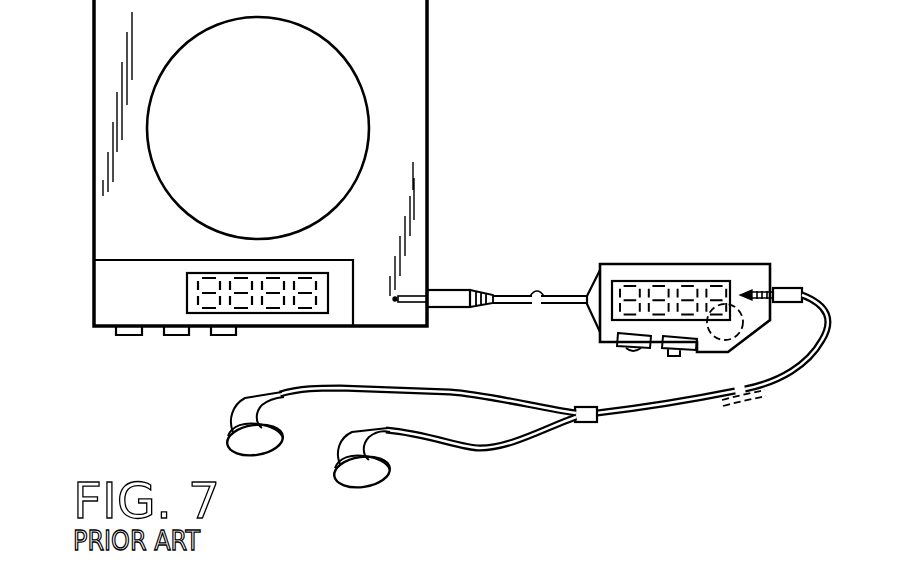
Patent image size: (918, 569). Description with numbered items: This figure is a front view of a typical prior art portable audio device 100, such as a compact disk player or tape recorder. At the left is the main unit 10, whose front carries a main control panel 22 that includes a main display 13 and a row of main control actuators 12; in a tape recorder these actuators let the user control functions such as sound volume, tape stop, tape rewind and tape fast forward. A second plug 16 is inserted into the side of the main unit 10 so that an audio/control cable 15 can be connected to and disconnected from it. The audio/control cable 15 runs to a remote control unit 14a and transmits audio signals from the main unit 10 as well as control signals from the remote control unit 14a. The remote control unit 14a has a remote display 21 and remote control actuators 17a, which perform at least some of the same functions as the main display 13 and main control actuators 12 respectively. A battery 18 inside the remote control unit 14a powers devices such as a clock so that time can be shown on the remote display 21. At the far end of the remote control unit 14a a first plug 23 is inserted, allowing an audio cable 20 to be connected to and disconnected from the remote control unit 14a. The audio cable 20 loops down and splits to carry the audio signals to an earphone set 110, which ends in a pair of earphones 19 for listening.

The portable audio device 100 is at (648, 106).
The main unit 10 is at (434, 127).
The main control panel 22 is at (105, 305).
The main display 13 is at (312, 315).
The main control actuators 12 is at (127, 337).
The second plug 16 is at (435, 292).
The audio/control cable 15 is at (567, 292).
The remote control unit 14a is at (672, 272).
The remote display 21 is at (619, 285).
The remote control actuators 17a is at (667, 357).
The battery 18 is at (742, 293).
The first plug 23 is at (784, 290).
The audio cable 20 is at (784, 376).
The earphone set 110 is at (630, 468).
The earphones 19 is at (340, 466).